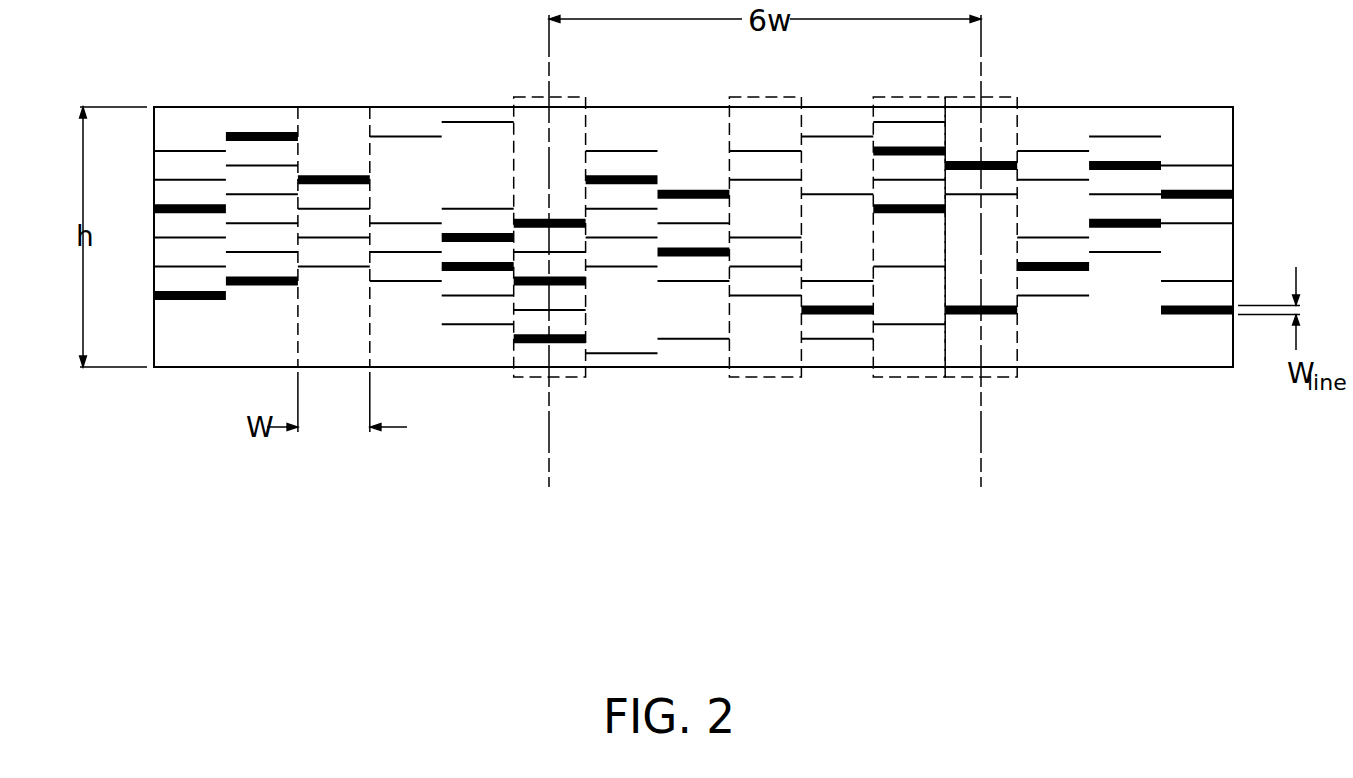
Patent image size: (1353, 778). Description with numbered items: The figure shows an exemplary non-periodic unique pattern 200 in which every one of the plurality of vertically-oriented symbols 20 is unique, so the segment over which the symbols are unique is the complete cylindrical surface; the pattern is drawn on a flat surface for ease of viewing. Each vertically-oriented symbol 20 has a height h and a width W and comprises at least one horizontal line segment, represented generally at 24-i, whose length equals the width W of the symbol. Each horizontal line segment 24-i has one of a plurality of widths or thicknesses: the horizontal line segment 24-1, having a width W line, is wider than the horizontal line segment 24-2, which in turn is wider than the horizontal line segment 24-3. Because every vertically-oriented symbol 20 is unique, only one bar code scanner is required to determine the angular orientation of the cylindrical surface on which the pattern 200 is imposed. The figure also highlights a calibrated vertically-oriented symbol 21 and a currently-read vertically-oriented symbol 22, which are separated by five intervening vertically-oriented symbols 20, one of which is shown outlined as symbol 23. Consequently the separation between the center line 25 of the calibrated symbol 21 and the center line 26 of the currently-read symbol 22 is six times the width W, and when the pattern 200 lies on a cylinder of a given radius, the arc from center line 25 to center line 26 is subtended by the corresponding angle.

The non-periodic unique pattern 200 is at (693, 362).
The vertically-oriented symbol 20 is at (772, 379).
The calibrated vertically-oriented symbol 21 is at (521, 96).
The currently-read vertically-oriented symbol 22 is at (1008, 379).
The column with thick lines 23 is at (912, 379).
The horizontal line segment 24-1 is at (1200, 316).
The horizontal line segment 24-2 is at (335, 176).
The horizontal line segment 24-3 is at (1052, 150).
The horizontal line segment 24-i is at (1183, 165).
The center line 25 is at (548, 460).
The center line 26 is at (980, 460).